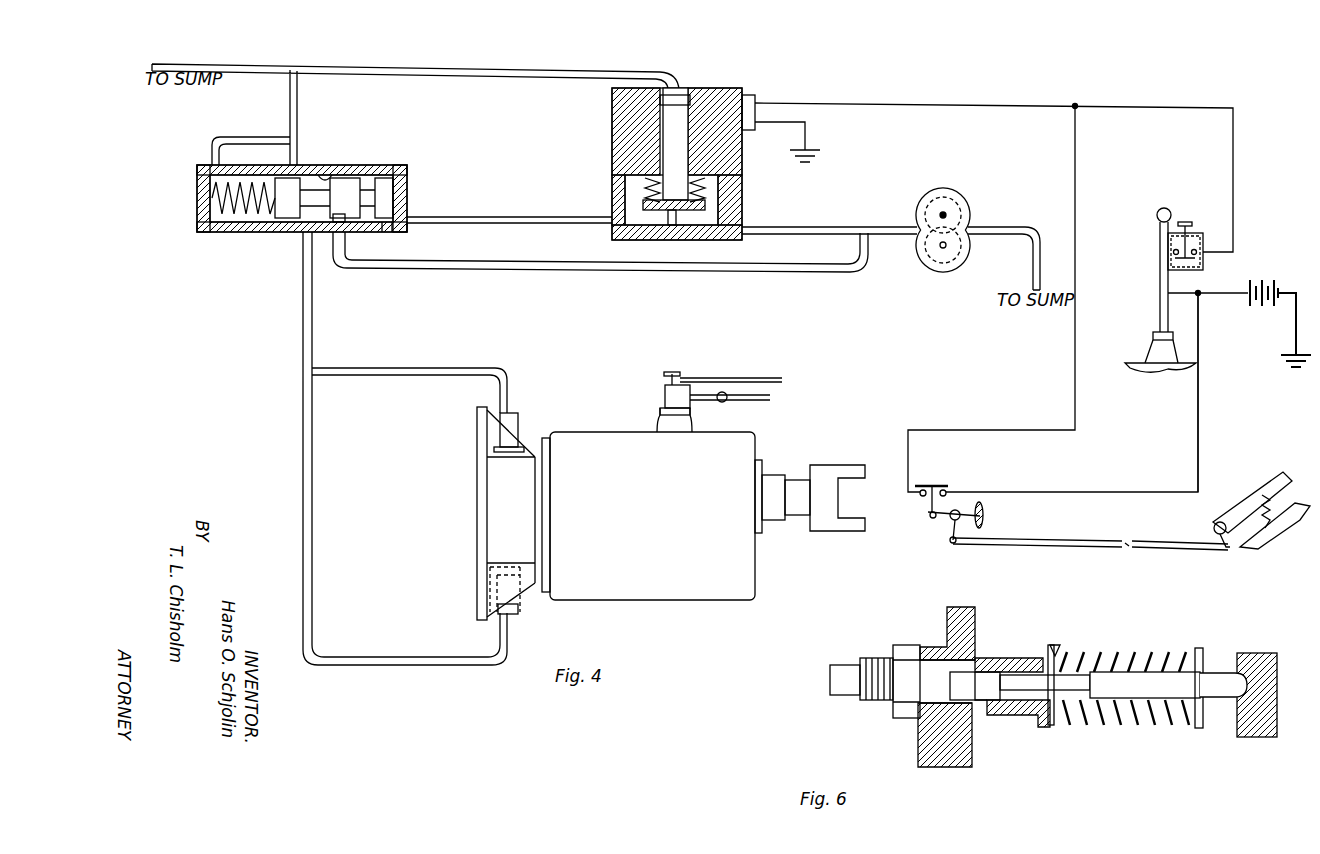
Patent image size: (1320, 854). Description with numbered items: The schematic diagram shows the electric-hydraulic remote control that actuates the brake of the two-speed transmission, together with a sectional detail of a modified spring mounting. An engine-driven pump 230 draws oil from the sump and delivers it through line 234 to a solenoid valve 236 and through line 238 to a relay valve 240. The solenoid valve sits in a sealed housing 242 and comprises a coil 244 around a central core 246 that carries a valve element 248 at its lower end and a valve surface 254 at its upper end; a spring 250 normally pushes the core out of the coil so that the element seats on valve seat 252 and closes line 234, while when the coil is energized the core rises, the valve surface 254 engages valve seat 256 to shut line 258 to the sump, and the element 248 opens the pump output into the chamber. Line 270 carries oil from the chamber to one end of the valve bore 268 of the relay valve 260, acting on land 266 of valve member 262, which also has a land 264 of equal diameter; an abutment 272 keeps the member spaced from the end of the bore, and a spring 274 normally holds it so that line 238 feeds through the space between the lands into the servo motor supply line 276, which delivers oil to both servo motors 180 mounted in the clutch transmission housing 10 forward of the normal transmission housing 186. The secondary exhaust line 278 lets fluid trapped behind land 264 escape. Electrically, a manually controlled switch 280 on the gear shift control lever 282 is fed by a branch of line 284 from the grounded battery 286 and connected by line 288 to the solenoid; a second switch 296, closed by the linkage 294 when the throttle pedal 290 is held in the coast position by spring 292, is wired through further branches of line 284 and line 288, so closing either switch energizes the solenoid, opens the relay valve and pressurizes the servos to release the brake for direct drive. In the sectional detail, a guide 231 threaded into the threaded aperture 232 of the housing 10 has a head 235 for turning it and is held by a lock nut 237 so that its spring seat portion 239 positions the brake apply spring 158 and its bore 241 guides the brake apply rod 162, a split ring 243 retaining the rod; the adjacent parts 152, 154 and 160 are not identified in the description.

In FIG. 4, the clutch transmission housing 10 is at (477, 508).
In FIG. 6, the clutch transmission housing 10 is at (950, 750).
In FIG. 6, the wall 152 is at (1265, 653).
In FIG. 6, the rod end 154 is at (1235, 712).
In FIG. 6, the brake apply spring 158 is at (1134, 652).
In FIG. 6, the washer 160 is at (1200, 650).
In FIG. 6, the brake apply rod 162 is at (1112, 700).
In FIG. 4, the servo motors 180 is at (520, 428).
In FIG. 4, the normal transmission housing 186 is at (641, 596).
In FIG. 4, the pump 230 is at (943, 273).
In FIG. 6, the guide 231 is at (985, 658).
In FIG. 6, the threaded aperture 232 is at (926, 705).
In FIG. 4, the line 234 is at (833, 236).
In FIG. 6, the head 235 is at (842, 693).
In FIG. 4, the solenoid valve 236 is at (746, 203).
In FIG. 6, the lock nut 237 is at (910, 647).
In FIG. 4, the line 238 is at (582, 270).
In FIG. 6, the spring seat portion 239 is at (1057, 652).
In FIG. 4, the relay valve 240 is at (393, 166).
In FIG. 6, the bore 241 is at (978, 702).
In FIG. 4, the sealed housing 242 is at (628, 178).
In FIG. 6, the split ring 243 is at (1049, 655).
In FIG. 4, the coil 244 is at (625, 105).
In FIG. 4, the central core 246 is at (673, 88).
In FIG. 4, the valve element 248 is at (696, 212).
In FIG. 4, the spring 250 is at (706, 184).
In FIG. 4, the valve seat 252 is at (676, 226).
In FIG. 4, the valve surface 254 is at (692, 97).
In FIG. 4, the valve seat 256 is at (688, 97).
In FIG. 4, the line 258 is at (450, 78).
In FIG. 4, the relay valve 260 is at (208, 240).
In FIG. 4, the valve member 262 is at (338, 212).
In FIG. 4, the land 264 is at (288, 222).
In FIG. 4, the land 266 is at (390, 233).
In FIG. 4, the valve bore 268 is at (326, 176).
In FIG. 4, the line 270 is at (487, 217).
In FIG. 4, the abutment 272 is at (407, 192).
In FIG. 4, the spring 274 is at (212, 186).
In FIG. 4, the servo motor supply line 276 is at (303, 345).
In FIG. 4, the secondary exhaust line 278 is at (255, 137).
In FIG. 4, the manually controlled switch 280 is at (1200, 234).
In FIG. 4, the gear shift control lever 282 is at (1160, 303).
In FIG. 4, the line 284 is at (1203, 296).
In FIG. 4, the battery 286 is at (1262, 282).
In FIG. 4, the line 288 is at (1136, 108).
In FIG. 4, the throttle pedal 290 is at (1270, 490).
In FIG. 4, the spring 292 is at (1262, 533).
In FIG. 4, the linkage 294 is at (1022, 540).
In FIG. 4, the switch 296 is at (934, 484).